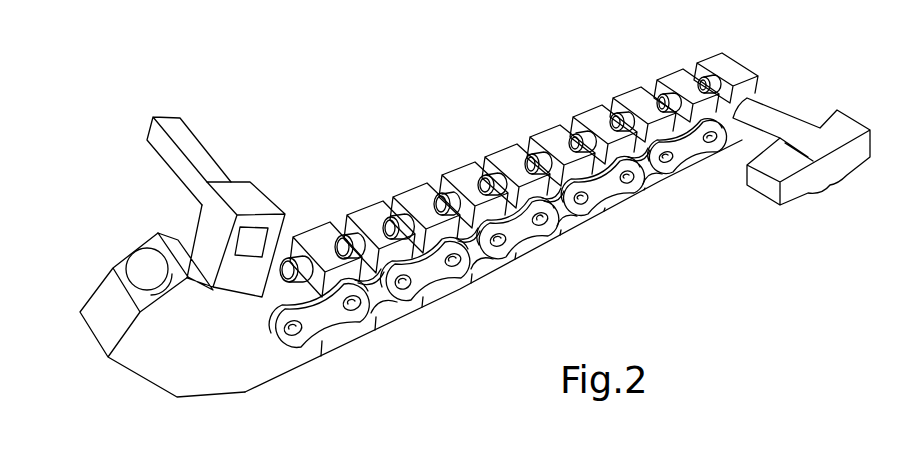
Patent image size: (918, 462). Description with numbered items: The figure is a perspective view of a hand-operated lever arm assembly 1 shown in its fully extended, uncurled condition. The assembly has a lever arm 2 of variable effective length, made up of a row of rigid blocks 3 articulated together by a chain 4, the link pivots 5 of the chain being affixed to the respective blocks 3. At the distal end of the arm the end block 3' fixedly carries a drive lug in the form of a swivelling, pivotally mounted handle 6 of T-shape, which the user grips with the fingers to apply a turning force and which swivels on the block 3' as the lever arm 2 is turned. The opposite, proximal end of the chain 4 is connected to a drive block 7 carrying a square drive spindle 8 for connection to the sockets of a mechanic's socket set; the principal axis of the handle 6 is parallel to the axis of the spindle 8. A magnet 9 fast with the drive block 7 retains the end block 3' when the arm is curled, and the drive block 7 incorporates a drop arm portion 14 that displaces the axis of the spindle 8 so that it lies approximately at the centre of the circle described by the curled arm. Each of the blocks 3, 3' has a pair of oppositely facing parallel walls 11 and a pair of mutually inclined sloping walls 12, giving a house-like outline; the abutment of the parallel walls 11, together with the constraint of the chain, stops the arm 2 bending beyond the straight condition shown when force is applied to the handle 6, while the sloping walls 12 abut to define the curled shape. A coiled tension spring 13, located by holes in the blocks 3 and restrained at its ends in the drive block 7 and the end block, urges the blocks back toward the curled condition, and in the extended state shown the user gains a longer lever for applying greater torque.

The lever arm assembly 1 is at (411, 294).
The lever arm 2 is at (561, 255).
The rigid blocks 3 is at (504, 182).
The end block 3' is at (728, 67).
The chain 4 is at (600, 188).
The link pivots 5 is at (413, 281).
The handle 6 is at (798, 190).
The drive block 7 is at (200, 367).
The drive spindle 8 is at (190, 147).
The magnet 9 is at (138, 263).
The parallel walls 11 is at (518, 243).
The sloping walls 12 is at (442, 183).
The coiled tension spring 13 is at (363, 235).
The drop arm portion 14 is at (205, 227).